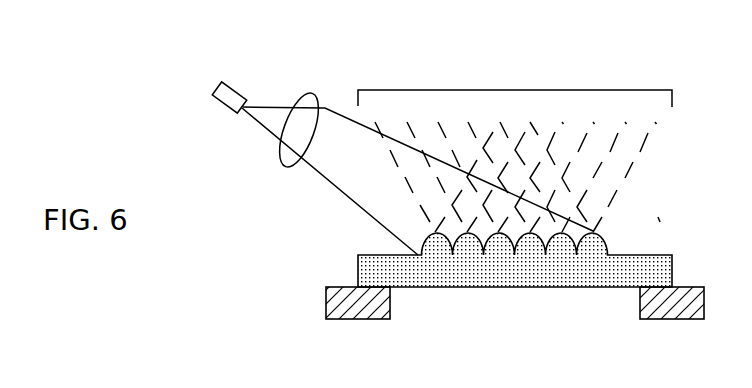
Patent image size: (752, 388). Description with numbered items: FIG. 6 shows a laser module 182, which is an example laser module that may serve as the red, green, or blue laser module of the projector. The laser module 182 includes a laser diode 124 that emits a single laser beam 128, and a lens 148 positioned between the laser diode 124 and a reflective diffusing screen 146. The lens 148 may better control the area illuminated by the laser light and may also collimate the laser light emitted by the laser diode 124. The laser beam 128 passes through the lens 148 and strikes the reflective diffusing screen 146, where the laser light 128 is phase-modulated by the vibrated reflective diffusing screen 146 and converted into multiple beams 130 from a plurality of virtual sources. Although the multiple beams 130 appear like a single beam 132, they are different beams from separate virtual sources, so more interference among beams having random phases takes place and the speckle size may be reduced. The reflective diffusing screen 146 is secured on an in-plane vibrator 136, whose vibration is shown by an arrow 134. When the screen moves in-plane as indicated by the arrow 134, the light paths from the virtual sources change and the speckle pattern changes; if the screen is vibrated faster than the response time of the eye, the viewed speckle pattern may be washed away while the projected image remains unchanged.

The laser module 182 is at (404, 42).
The laser diode 124 is at (213, 86).
The lens 148 is at (323, 95).
The laser beam 128 is at (270, 135).
The single beam 132 is at (633, 90).
The multiple beams 130 is at (640, 150).
The arrow 134 is at (366, 228).
The reflective diffusing screen 146 is at (632, 254).
The in-plane vibrator 136 is at (697, 319).